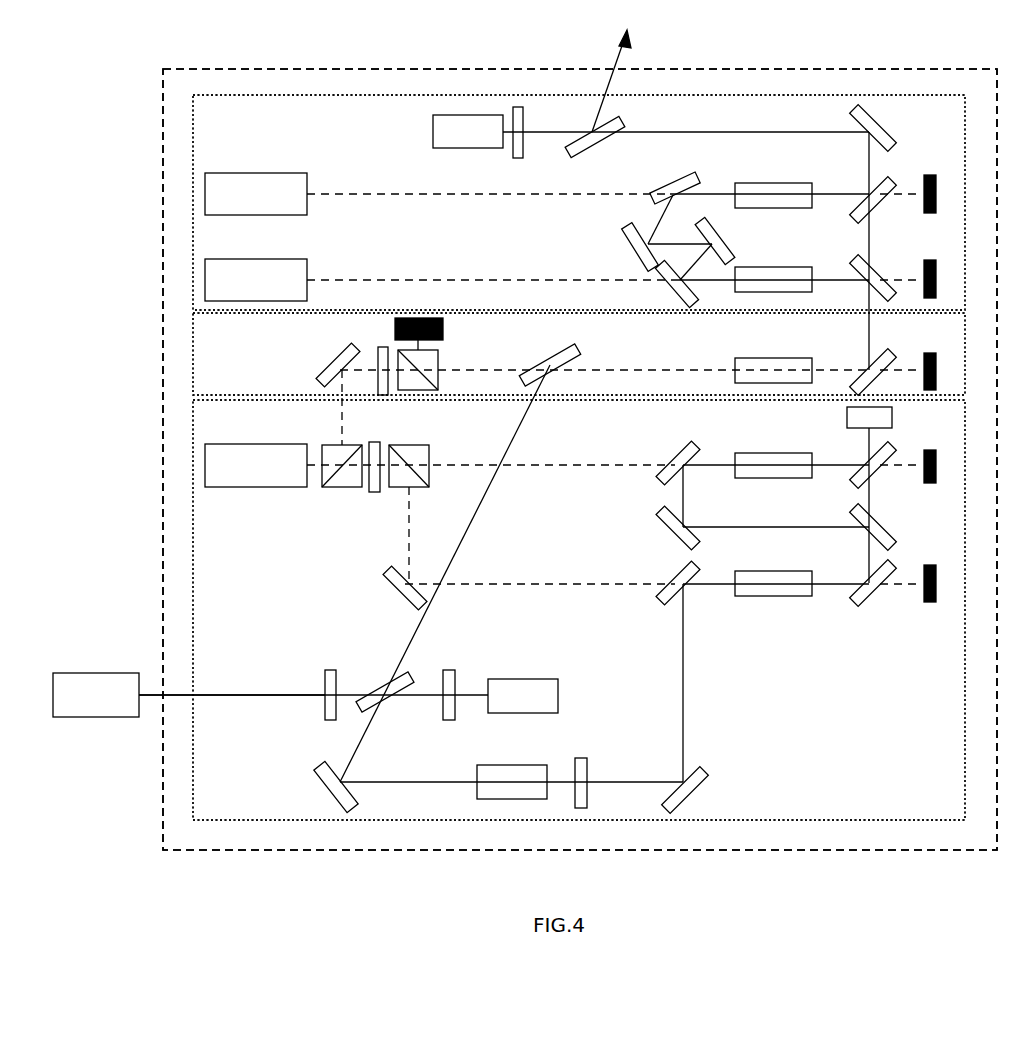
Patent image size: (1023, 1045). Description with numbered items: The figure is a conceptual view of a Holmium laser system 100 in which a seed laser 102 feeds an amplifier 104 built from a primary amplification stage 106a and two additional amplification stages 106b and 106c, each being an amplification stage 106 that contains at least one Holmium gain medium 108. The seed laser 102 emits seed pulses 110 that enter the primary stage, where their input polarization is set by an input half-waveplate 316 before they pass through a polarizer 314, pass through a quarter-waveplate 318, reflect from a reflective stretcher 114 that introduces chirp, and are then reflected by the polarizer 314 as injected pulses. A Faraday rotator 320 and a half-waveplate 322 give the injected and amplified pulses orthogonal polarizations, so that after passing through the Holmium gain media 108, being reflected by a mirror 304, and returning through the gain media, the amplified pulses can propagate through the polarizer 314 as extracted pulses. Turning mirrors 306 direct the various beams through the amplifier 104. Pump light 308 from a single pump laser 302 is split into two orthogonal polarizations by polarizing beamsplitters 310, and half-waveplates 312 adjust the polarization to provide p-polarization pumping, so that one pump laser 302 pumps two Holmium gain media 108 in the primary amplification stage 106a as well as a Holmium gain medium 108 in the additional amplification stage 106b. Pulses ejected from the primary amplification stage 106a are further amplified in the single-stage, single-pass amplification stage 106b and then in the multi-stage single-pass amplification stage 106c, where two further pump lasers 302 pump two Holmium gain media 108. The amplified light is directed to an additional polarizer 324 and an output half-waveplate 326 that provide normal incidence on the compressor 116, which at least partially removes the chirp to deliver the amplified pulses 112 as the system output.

The Holmium laser system 100 is at (57, 44).
The seed laser 102 is at (114, 707).
The amplifier 104 is at (163, 130).
The amplification stage 106 is at (193, 200).
The primary amplification stage 106a is at (249, 429).
The additional amplification stage 106b is at (249, 342).
The additional amplification stage 106c is at (249, 126).
The Holmium gain medium 108 is at (770, 209).
The seed pulses 110 is at (246, 694).
The amplified pulses 112 is at (614, 54).
The stretcher 114 is at (520, 679).
The compressor 116 is at (433, 132).
The pump laser 302 is at (274, 206).
The mirror 304 is at (892, 418).
The turning mirrors 306 is at (606, 236).
The pump light 308 is at (456, 198).
The polarizing beamsplitters 310 is at (413, 392).
The half-waveplates 312 is at (380, 347).
The polarizer 314 is at (400, 680).
The input half-waveplate 316 is at (330, 722).
The quarter-waveplate 318 is at (448, 722).
The Faraday rotator 320 is at (510, 765).
The half-waveplate 322 is at (580, 758).
The additional polarizer 324 is at (596, 146).
The output half-waveplate 326 is at (515, 158).